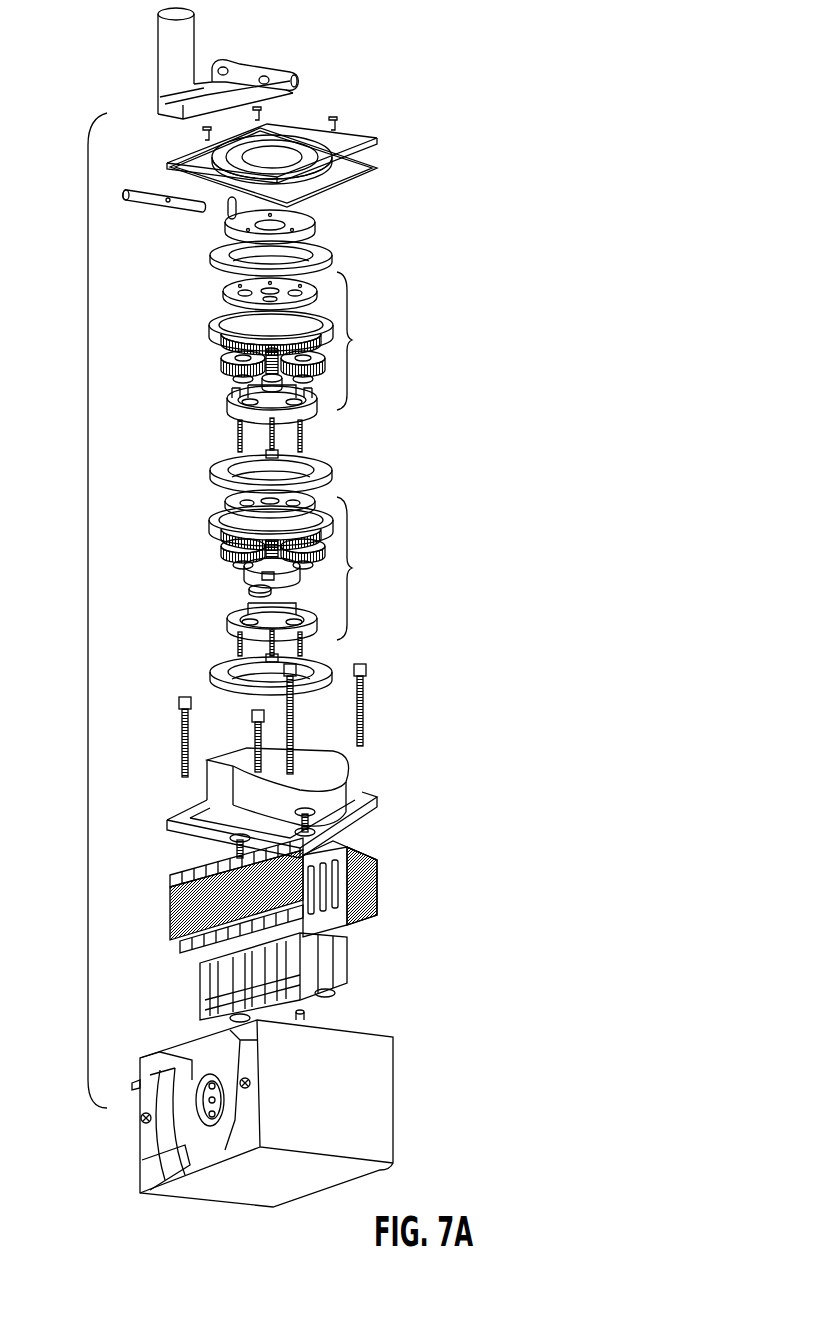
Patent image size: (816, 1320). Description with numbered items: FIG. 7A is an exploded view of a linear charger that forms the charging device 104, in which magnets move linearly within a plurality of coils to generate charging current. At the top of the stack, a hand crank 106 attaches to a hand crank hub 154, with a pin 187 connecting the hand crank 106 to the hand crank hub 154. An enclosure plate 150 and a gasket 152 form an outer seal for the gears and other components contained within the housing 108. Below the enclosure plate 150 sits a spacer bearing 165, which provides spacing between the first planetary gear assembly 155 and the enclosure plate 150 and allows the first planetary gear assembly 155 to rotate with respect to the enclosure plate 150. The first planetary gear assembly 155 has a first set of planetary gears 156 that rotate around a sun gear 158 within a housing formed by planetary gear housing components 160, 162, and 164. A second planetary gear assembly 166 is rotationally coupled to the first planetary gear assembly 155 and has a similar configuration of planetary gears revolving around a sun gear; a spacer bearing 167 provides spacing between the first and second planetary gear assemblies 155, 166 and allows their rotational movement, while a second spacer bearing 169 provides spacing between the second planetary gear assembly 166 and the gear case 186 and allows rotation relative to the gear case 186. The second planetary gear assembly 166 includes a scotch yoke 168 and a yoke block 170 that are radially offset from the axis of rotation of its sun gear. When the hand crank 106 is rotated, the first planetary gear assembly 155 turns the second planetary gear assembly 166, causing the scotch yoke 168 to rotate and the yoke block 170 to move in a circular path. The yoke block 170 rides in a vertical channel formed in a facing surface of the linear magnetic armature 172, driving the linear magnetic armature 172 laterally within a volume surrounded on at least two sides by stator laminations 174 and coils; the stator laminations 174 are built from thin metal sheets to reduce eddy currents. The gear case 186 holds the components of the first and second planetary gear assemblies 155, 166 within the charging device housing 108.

The charging device 104 is at (88, 612).
The hand crank 106 is at (163, 45).
The housing 108 is at (358, 1093).
The enclosure plate 150 is at (375, 140).
The gasket 152 is at (380, 170).
The hand crank hub 154 is at (320, 222).
The first planetary gear assembly 155 is at (365, 341).
The first set of planetary gears 156 is at (285, 378).
The sun gear 158 is at (215, 341).
The planetary gear housing component 160 is at (228, 404).
The planetary gear housing component 162 is at (212, 327).
The planetary gear housing component 164 is at (225, 293).
The spacer bearing 165 is at (212, 255).
The second planetary gear assembly 166 is at (300, 576).
The spacer bearing 167 is at (320, 470).
The scotch yoke 168 is at (256, 575).
The second spacer bearing 169 is at (212, 674).
The yoke block 170 is at (258, 592).
The linear magnetic armature 172 is at (350, 970).
The stator laminations 174 is at (170, 930).
The gear case 186 is at (212, 780).
The pin 187 is at (123, 196).